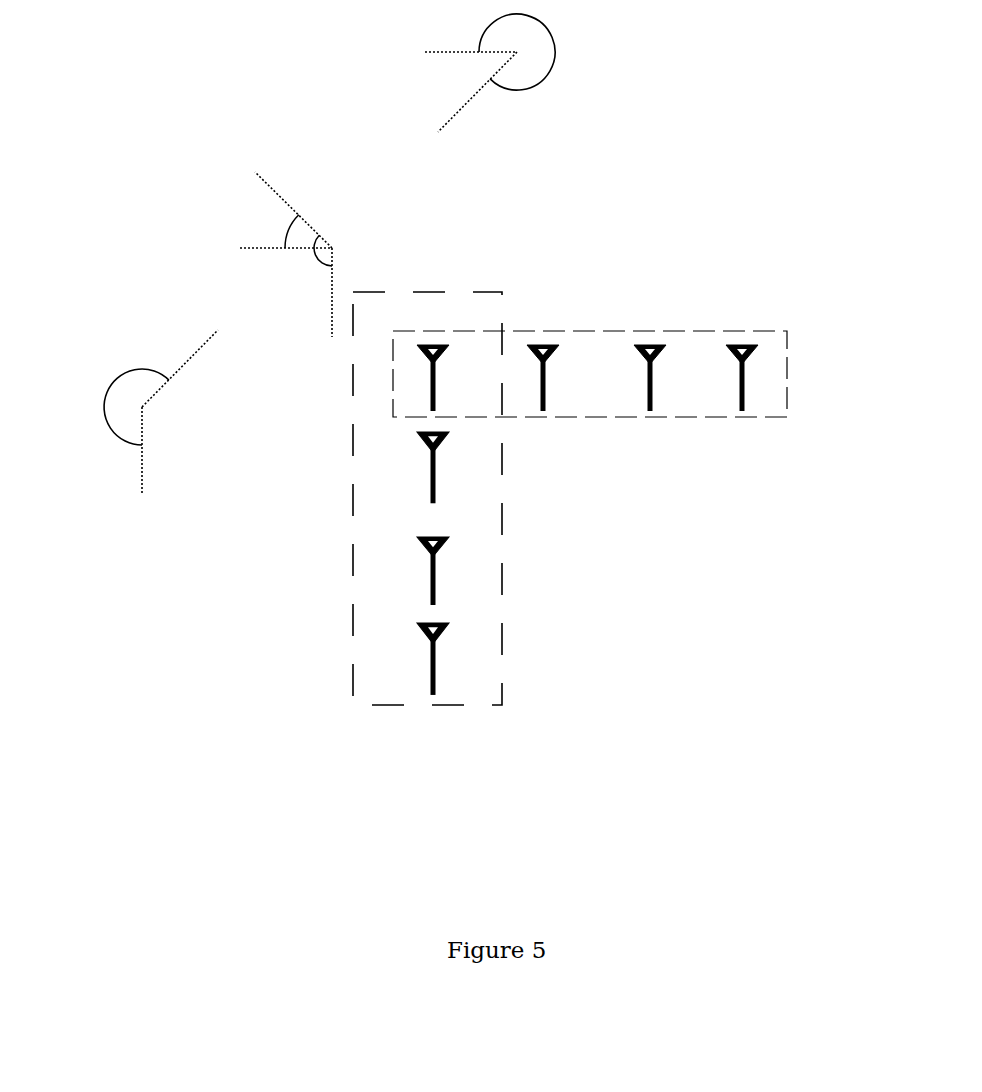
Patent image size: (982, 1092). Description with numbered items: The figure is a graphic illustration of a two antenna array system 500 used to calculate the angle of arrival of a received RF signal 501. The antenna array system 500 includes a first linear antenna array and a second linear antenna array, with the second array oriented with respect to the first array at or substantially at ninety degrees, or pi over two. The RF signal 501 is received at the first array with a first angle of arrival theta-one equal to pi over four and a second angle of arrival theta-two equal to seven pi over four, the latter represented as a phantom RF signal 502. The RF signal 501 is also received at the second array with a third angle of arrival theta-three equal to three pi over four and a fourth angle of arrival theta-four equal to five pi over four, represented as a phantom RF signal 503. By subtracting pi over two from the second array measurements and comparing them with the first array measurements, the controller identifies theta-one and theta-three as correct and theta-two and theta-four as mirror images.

The two antenna array system 500 is at (771, 177).
The received RF signal 501 is at (283, 180).
The phantom RF signal 502 is at (470, 113).
The phantom RF signal 503 is at (207, 353).